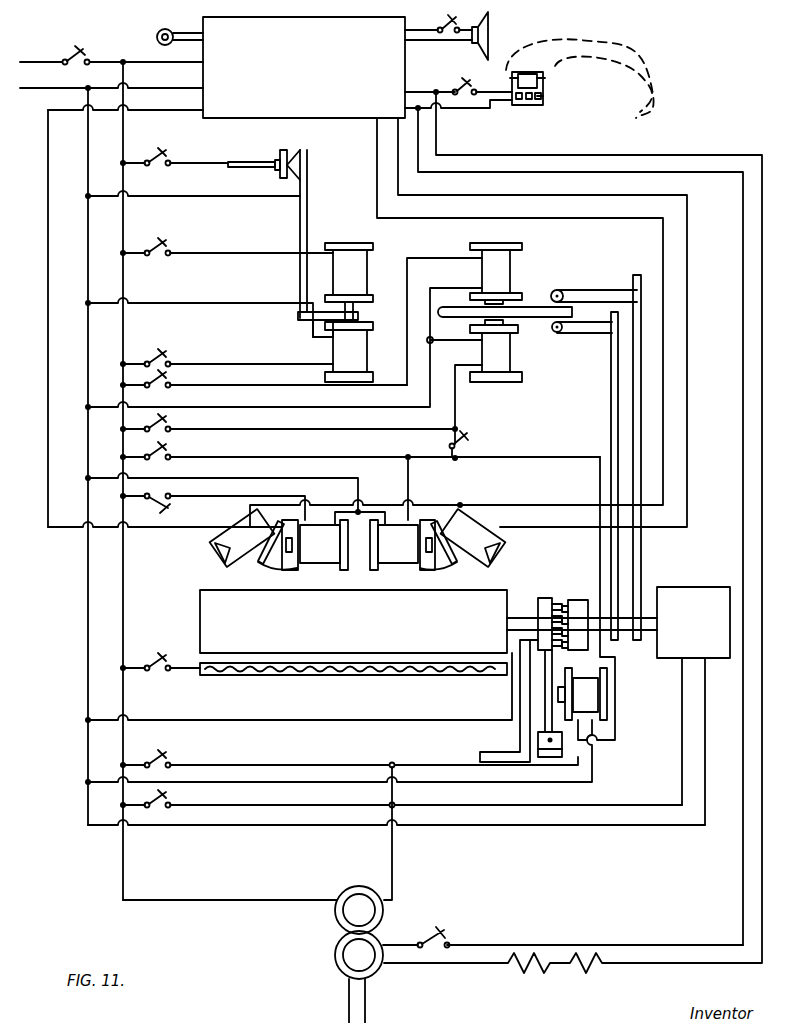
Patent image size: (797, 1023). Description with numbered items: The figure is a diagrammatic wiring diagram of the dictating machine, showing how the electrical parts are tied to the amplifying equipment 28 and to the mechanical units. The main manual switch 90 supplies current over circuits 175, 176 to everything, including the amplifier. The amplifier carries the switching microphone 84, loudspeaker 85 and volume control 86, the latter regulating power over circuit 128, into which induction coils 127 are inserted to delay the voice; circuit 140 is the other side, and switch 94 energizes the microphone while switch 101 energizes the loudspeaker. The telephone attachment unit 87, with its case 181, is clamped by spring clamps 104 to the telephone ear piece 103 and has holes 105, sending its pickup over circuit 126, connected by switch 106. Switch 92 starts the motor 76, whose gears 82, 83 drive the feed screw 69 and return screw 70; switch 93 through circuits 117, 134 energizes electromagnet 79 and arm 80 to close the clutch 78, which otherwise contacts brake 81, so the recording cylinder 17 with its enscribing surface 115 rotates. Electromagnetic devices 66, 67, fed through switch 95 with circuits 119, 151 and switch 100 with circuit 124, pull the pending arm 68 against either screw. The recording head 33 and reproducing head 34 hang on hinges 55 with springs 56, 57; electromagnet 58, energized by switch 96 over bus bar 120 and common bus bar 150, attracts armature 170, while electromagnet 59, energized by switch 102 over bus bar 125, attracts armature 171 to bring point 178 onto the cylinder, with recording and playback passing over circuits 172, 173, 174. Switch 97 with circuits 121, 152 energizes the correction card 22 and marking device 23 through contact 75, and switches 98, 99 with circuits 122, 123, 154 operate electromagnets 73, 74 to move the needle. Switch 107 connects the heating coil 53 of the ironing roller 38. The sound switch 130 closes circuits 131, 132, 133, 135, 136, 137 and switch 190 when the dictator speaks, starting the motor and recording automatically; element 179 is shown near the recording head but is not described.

The recording cylinder 17 is at (200, 612).
The correction card 22 is at (283, 150).
The marking device 23 is at (307, 208).
The electronic amplifying equipment 28 is at (304, 67).
The recording head 33 is at (468, 538).
The reproducing head 34 is at (247, 538).
The ironing roller 38 is at (302, 681).
The electrical heating coil 53 is at (258, 675).
The hinges 55 is at (282, 519).
The spring 56 is at (447, 573).
The spring 57 is at (270, 573).
The electromagnet 58 is at (394, 545).
The electromagnet 59 is at (324, 545).
The electromagnetic device 66 is at (496, 351).
The electromagnetic device 67 is at (496, 273).
The pending arm 68 is at (549, 305).
The feed screw 69 is at (600, 331).
The return screw 70 is at (578, 291).
The electromagnet 73 is at (349, 352).
The electromagnet 74 is at (349, 282).
The electrical contact 75 is at (52, 63).
The motor 76 is at (693, 706).
The clutch 78 is at (588, 600).
The electromagnet 79 is at (582, 694).
The arm 80 is at (553, 576).
The brake 81 is at (519, 731).
The gear 82 is at (611, 388).
The gear 83 is at (637, 361).
The switching microphone 84 is at (335, 951).
The loudspeaker 85 is at (489, 20).
The volume control 86 is at (165, 38).
The attachment unit 87 is at (516, 112).
The main manual switch 90 is at (87, 53).
The switch 92 is at (159, 796).
The switch 93 is at (164, 756).
The switch 94 is at (563, 936).
The switch 95 is at (158, 421).
The switch 96 is at (158, 449).
The switch 97 is at (174, 155).
The switch 98 is at (159, 355).
The switch 99 is at (226, 245).
The switch 100 is at (263, 377).
The switch 101 is at (448, 16).
The switch 102 is at (163, 495).
The telephone ear piece 103 is at (580, 73).
The spring clamps 104 is at (541, 82).
The holes 105 is at (545, 101).
The switch 106 is at (458, 82).
The switch 107 is at (160, 659).
The enscribing surface 115 is at (200, 590).
The circuit 117 is at (374, 757).
The circuit 119 is at (326, 434).
The bus bar 120 is at (426, 476).
The circuit 121 is at (208, 159).
The circuit 122 is at (296, 369).
The circuit 123 is at (231, 253).
The circuit 124 is at (410, 263).
The bus bar 125 is at (294, 500).
The circuit 126 is at (485, 106).
The induction coils 127 is at (470, 43).
The circuit 128 is at (190, 20).
The sound switch 130 is at (357, 887).
The circuit 131 is at (396, 873).
The circuit 132 is at (183, 898).
The circuit 133 is at (396, 803).
The circuit 134 is at (593, 784).
The circuit 135 is at (591, 461).
The circuit 136 is at (455, 458).
The circuit 137 is at (462, 463).
The circuit 140 is at (729, 909).
The common bus bar 150 is at (328, 484).
The circuit 151 is at (389, 409).
The circuit 152 is at (194, 186).
The circuit 154 is at (251, 308).
The armature 170 is at (470, 566).
The armature 171 is at (232, 562).
The circuit 172 is at (561, 509).
The circuit 173 is at (561, 532).
The circuit 174 is at (142, 111).
The circuit 175 is at (141, 64).
The circuit 176 is at (148, 80).
The point 178 is at (215, 548).
The armature edge 179 is at (498, 548).
The case 181 is at (620, 58).
The switch 190 is at (464, 440).